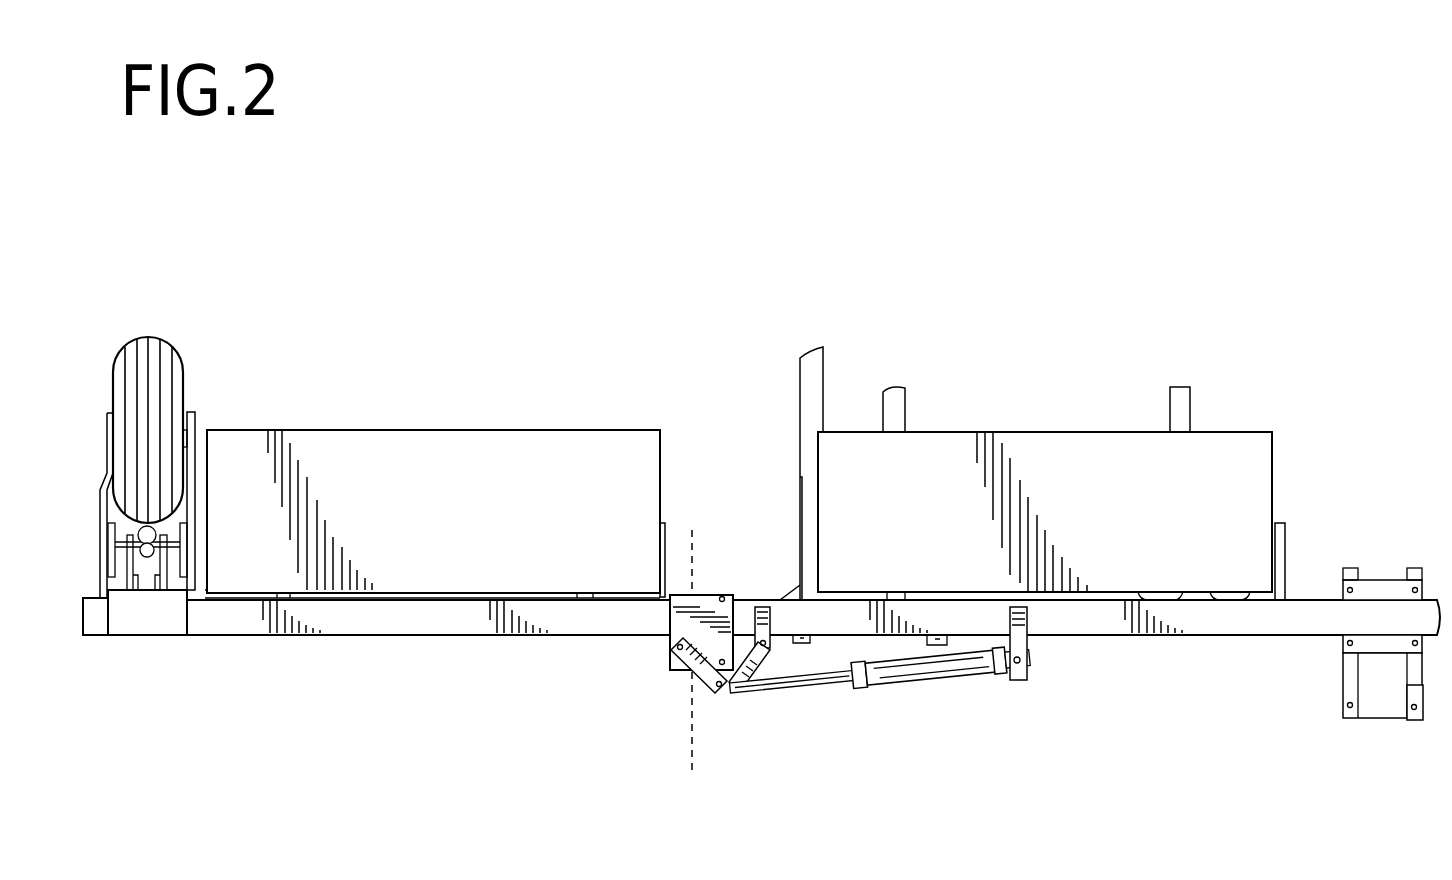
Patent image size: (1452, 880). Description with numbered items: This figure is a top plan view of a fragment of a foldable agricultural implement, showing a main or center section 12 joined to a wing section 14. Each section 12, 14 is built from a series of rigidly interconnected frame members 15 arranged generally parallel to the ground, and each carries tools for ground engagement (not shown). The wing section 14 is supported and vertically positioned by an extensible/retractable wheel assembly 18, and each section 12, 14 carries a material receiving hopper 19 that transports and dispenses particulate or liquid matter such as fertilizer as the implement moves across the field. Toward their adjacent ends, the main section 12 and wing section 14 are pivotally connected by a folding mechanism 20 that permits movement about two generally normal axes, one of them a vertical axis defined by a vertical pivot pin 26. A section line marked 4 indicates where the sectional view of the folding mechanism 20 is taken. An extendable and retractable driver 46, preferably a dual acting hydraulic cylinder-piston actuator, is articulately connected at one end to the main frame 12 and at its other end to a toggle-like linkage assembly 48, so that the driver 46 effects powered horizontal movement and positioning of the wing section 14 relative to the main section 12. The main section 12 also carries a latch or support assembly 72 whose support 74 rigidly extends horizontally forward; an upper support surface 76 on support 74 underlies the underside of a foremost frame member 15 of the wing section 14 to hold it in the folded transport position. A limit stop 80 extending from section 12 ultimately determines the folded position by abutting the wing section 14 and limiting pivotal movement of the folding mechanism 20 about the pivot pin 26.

The section line 4- 4 is at (712, 543).
The main or center section 12 is at (1124, 639).
The wing section 14 is at (358, 641).
The frame members 15 is at (440, 620).
The extensible/retractable wheel assembly 18 is at (197, 382).
The material receiving hopper 19 is at (448, 517).
The folding mechanism 20 is at (662, 648).
The vertical pivot pin 26 is at (702, 671).
The extendable and retractable driver 46 is at (938, 684).
The linkage assembly 48 is at (720, 697).
The latch or support assembly 72 is at (1336, 699).
The support 74 is at (1340, 660).
The upper support surface 76 is at (1417, 724).
The limit stop 80 is at (1034, 671).